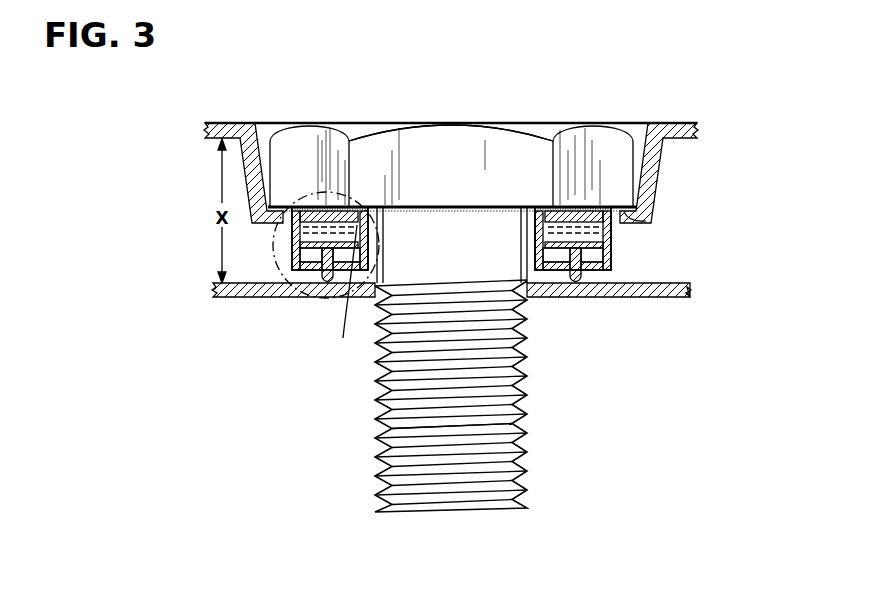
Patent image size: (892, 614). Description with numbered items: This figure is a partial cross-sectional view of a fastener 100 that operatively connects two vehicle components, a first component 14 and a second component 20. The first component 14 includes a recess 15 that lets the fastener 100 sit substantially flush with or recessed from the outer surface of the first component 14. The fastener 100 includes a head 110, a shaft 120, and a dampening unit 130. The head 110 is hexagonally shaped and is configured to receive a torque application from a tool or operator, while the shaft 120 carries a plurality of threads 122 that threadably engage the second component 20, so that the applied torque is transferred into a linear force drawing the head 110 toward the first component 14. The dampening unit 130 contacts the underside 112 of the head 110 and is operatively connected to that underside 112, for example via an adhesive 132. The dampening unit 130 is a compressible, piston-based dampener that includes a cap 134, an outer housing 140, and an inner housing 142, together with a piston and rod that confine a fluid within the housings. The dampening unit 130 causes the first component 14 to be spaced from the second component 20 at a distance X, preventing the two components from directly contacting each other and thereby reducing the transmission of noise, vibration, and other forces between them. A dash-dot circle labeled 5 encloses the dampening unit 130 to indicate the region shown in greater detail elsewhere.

The first component 14 is at (226, 122).
The recess 15 is at (628, 122).
The second component 20 is at (223, 299).
The detail view circle 5 is at (357, 193).
The fastener 100 is at (348, 122).
The head 110 is at (412, 146).
The underside 112 is at (642, 216).
The shaft 120 is at (382, 421).
The threads 122 is at (498, 425).
The dampening unit 130 is at (313, 295).
The adhesive 132 is at (570, 207).
The cap 134 is at (552, 208).
The outer housing 140 is at (603, 273).
The inner housing 142 is at (343, 292).